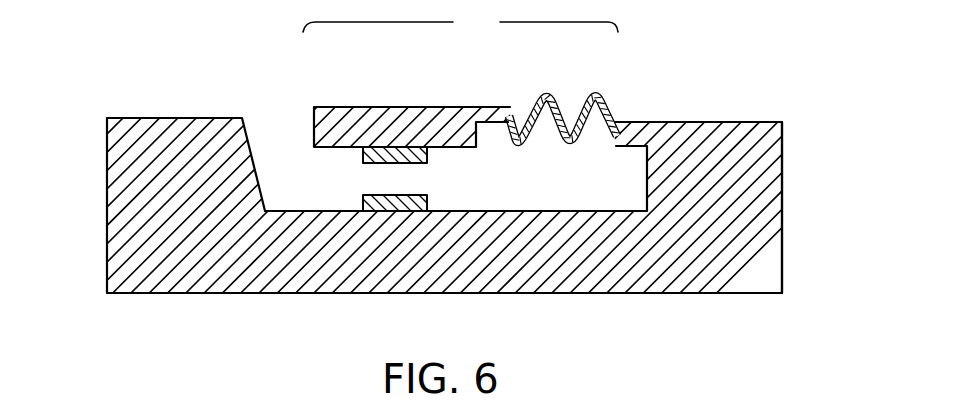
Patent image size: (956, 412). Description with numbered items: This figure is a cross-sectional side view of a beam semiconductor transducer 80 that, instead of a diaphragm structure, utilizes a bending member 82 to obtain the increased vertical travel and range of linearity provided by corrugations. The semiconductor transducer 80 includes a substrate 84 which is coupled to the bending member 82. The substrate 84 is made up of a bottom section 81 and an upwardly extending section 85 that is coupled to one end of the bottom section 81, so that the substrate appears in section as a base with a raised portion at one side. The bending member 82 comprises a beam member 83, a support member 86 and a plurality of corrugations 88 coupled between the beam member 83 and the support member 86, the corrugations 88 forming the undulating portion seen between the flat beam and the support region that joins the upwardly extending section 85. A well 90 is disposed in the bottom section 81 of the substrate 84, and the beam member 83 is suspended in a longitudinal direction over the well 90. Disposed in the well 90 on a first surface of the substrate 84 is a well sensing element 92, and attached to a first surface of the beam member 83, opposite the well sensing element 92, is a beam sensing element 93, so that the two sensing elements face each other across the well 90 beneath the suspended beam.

The semiconductor transducer 80 is at (458, 332).
The bottom section 81 is at (265, 293).
The bending member 82 is at (460, 23).
The beam member 83 is at (370, 107).
The substrate 84 is at (622, 268).
The upwardly extending section 85 is at (783, 186).
The support member 86 is at (623, 122).
The corrugations 88 is at (541, 92).
The well 90 is at (578, 195).
The well sensing element 92 is at (360, 206).
The beam sensing element 93 is at (428, 150).